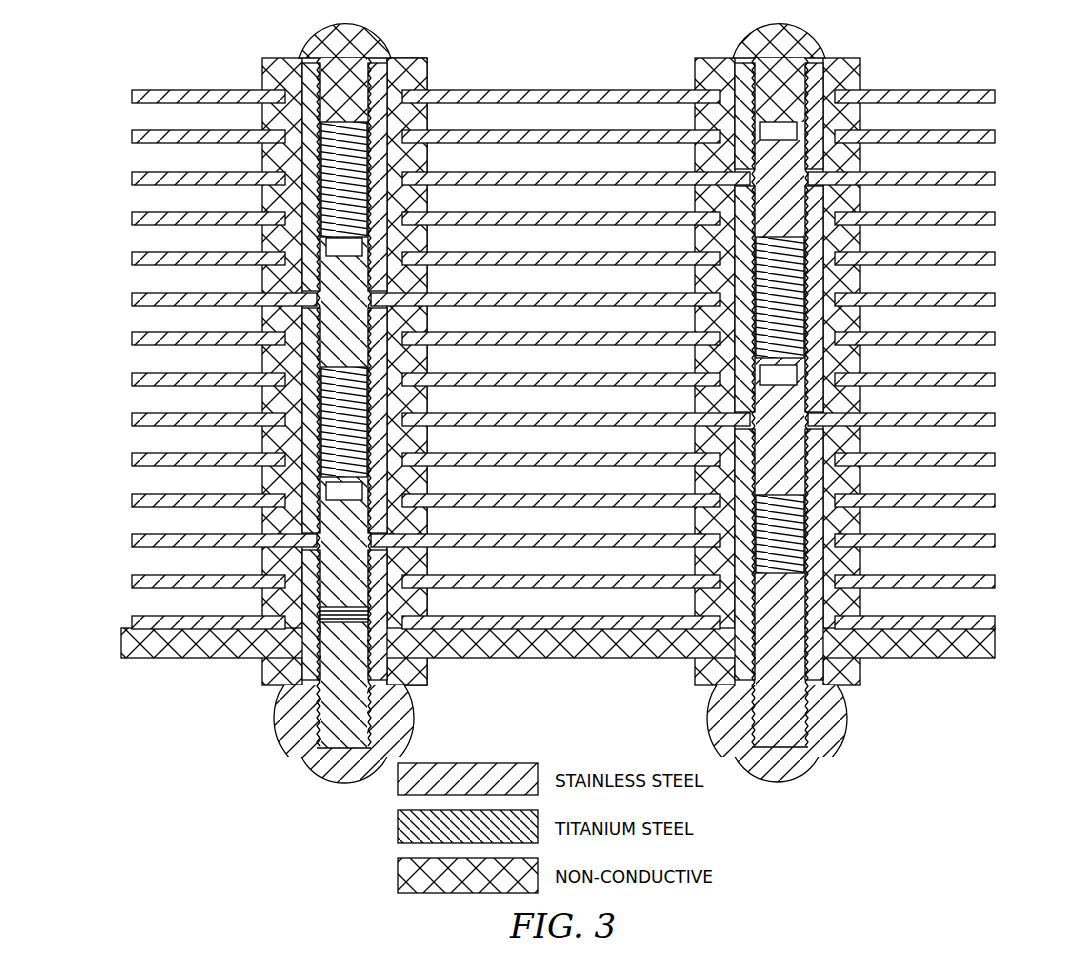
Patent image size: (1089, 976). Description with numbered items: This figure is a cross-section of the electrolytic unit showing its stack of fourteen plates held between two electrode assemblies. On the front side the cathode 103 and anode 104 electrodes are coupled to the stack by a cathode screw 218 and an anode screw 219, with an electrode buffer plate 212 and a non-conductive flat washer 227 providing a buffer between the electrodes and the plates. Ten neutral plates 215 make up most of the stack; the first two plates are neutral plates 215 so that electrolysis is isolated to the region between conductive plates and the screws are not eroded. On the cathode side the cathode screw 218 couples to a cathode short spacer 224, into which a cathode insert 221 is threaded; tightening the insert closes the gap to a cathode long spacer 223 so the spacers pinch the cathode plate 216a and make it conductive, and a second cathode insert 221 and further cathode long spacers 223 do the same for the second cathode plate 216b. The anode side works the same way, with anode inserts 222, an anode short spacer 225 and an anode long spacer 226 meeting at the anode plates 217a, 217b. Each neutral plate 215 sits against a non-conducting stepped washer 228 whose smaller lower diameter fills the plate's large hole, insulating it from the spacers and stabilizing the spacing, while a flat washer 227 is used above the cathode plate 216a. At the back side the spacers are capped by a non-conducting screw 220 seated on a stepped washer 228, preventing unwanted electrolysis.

The cathode electrode 103 is at (290, 724).
The anode electrode 104 is at (840, 718).
The electrode buffer plate 212 is at (171, 658).
The neutral plate 215 is at (132, 96).
The cathode plate 216a is at (132, 542).
The second cathode plate 216b is at (132, 300).
The anode plate 217a is at (995, 418).
The anode plate 217b is at (995, 177).
The cathode screw 218 is at (310, 772).
The anode screw 219 is at (810, 764).
The non-conducting screw 220 is at (302, 43).
The cathode insert 221 is at (353, 567).
The anode insert 222 is at (783, 441).
The cathode long spacer 223 is at (400, 352).
The cathode short spacer 224 is at (373, 602).
The anode short spacer 225 is at (808, 114).
The anode long spacer 226 is at (808, 287).
The non-conductive flat washer 227 is at (262, 75).
The non-conducting stepped washer 228 is at (395, 128).